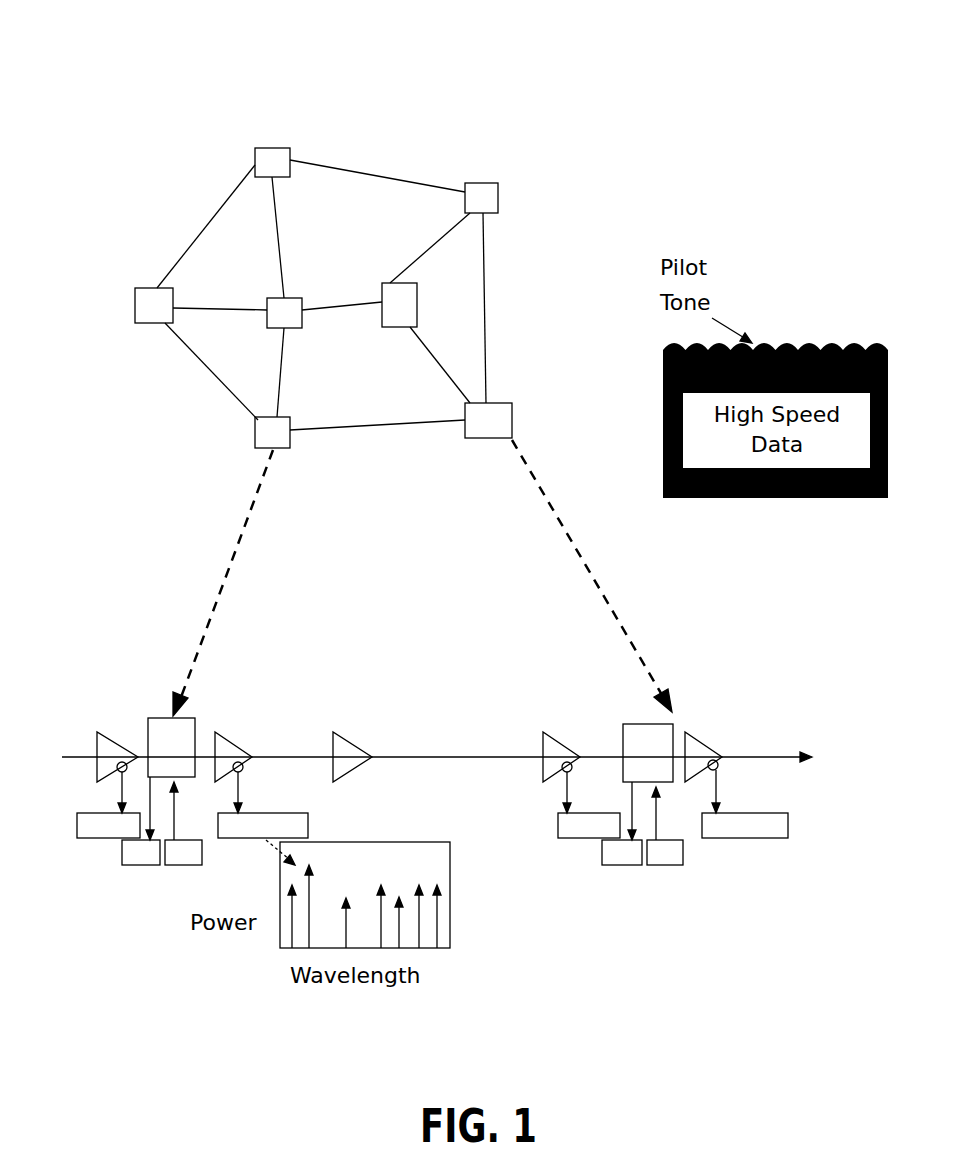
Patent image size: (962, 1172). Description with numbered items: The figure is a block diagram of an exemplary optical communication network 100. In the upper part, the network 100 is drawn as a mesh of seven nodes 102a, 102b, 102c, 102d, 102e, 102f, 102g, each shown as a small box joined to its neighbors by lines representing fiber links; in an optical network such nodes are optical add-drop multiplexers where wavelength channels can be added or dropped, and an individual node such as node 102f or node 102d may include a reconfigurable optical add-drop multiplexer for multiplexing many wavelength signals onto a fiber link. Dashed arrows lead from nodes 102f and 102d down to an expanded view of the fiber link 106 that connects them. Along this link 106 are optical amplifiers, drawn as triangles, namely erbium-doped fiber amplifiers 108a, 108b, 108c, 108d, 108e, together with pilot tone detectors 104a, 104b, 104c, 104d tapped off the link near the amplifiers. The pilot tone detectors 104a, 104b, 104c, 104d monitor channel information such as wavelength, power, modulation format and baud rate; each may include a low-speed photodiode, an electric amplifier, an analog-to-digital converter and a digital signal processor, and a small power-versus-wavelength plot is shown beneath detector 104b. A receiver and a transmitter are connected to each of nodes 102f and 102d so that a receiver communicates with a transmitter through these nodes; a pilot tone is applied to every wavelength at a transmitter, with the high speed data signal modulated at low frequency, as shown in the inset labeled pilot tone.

The optical communication network 100 is at (535, 110).
The node 102a is at (272, 148).
The node 102b is at (173, 302).
The node 102c is at (498, 192).
The node 102d is at (512, 414).
The node 102e is at (417, 300).
The node 102f is at (286, 449).
The node 102g is at (268, 320).
The pilot tone detector 104a is at (82, 813).
The pilot tone detector 104b is at (290, 813).
The pilot tone detector 104c is at (565, 838).
The pilot tone detector 104d is at (780, 838).
The fiber link 106 is at (385, 436).
The optical amplifier 108a is at (96, 748).
The optical amplifier 108b is at (218, 742).
The optical amplifier 108c is at (338, 735).
The optical amplifier 108d is at (560, 718).
The optical amplifier 108e is at (690, 745).